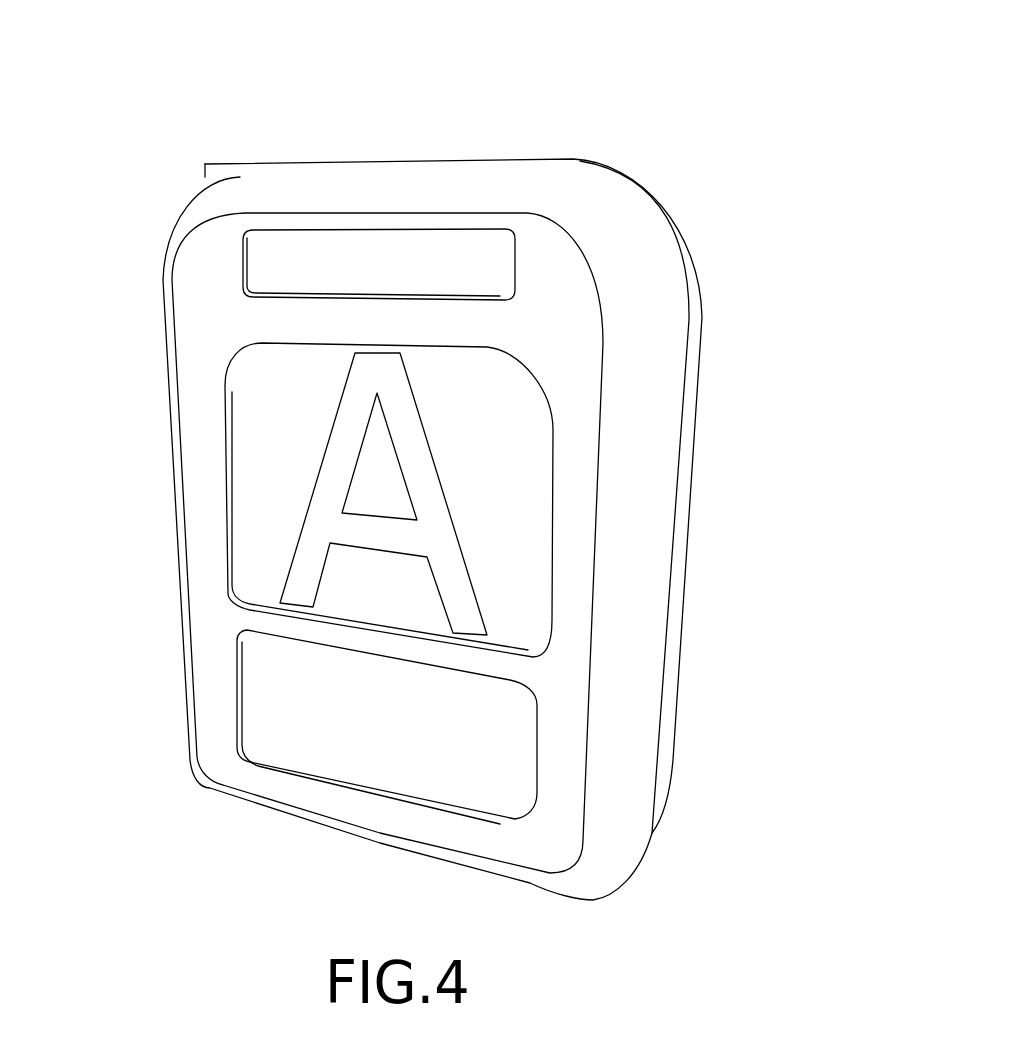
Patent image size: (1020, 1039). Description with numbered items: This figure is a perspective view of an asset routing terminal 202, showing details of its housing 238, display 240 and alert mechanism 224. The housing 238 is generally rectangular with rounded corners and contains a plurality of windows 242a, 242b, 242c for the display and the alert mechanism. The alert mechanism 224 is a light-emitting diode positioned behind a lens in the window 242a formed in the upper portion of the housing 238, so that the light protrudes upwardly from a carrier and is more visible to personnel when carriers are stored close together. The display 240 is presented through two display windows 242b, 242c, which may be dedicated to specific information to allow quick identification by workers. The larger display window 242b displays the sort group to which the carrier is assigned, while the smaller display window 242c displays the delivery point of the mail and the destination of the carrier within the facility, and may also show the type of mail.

The asset routing terminal 202 is at (720, 283).
The housing 238 is at (207, 790).
The display 240 is at (225, 367).
The alert mechanism 224 is at (437, 225).
The window 242a is at (325, 243).
The display window 242b is at (232, 467).
The display window 242c is at (245, 710).